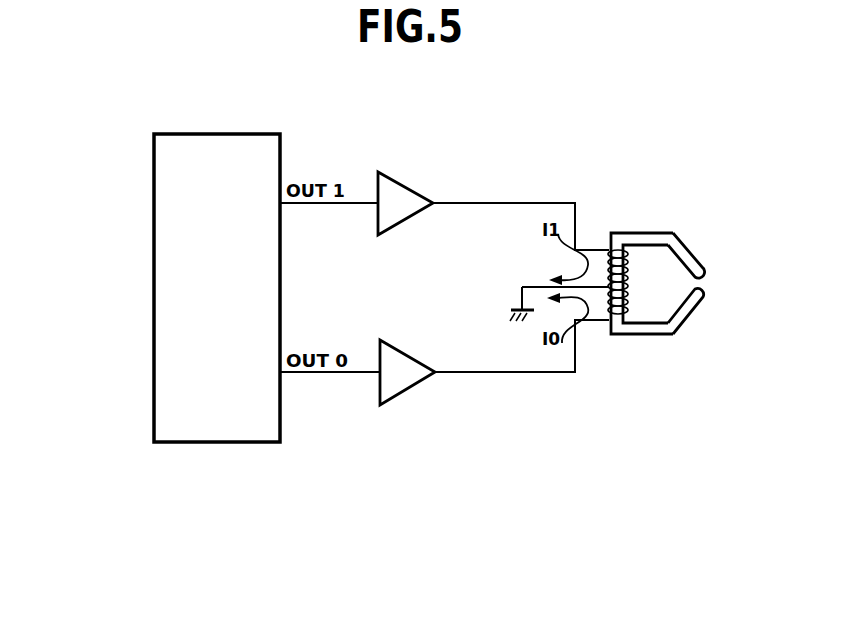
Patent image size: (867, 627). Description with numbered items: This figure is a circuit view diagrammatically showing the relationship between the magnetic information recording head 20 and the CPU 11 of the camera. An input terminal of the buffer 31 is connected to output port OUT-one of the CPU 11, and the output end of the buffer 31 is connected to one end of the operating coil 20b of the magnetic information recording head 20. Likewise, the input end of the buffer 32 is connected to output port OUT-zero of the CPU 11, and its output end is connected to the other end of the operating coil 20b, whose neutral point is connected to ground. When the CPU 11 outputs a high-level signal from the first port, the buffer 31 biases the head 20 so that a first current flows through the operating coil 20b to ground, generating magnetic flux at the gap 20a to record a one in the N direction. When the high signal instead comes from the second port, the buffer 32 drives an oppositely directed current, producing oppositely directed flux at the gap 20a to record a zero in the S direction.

The CPU 11 is at (162, 161).
The buffer 31 is at (396, 192).
The buffer 32 is at (400, 378).
The magnetic information recording head 20 is at (649, 238).
The gap 20a is at (698, 278).
The operating coil 20b is at (598, 275).